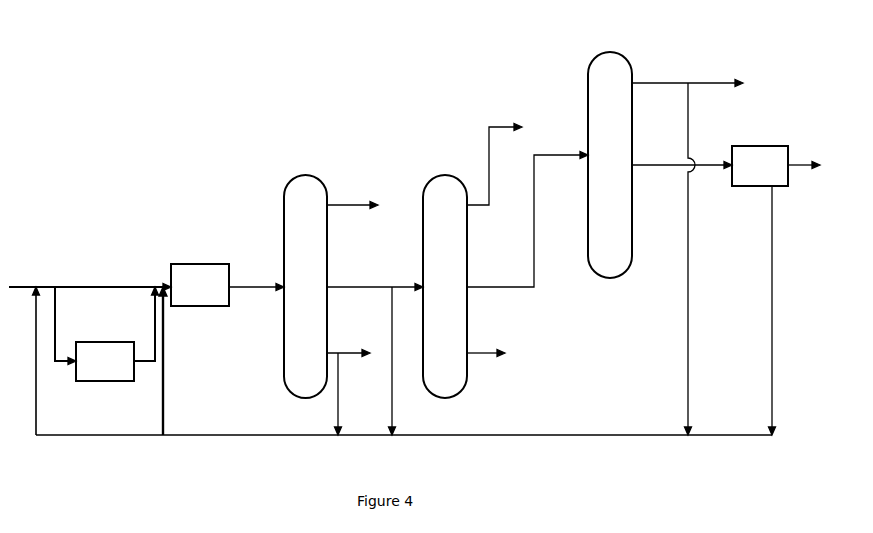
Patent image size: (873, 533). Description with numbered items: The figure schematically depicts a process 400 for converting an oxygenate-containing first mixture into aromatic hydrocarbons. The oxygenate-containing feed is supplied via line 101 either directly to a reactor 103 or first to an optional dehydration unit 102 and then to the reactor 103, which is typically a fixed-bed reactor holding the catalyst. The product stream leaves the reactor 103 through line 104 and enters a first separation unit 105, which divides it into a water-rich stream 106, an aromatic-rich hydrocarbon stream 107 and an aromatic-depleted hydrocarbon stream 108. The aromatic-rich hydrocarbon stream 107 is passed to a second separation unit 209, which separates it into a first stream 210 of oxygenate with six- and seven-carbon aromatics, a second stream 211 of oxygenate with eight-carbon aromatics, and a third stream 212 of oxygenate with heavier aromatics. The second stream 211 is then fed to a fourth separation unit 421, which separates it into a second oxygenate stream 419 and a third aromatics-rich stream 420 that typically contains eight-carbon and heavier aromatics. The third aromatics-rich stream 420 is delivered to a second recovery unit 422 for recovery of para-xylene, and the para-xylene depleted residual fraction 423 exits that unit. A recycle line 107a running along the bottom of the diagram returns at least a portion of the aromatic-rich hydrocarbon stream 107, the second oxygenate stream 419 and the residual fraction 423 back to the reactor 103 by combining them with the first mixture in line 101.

The process 400 is at (180, 97).
The line 101 is at (96, 287).
The dehydration unit 102 is at (107, 334).
The reactor 103 is at (200, 285).
The line 104 is at (262, 287).
The first separation unit 105 is at (305, 286).
The water-rich stream 106 is at (353, 205).
The aromatic-rich hydrocarbon stream 107 is at (350, 287).
The recycle line 107a is at (562, 434).
The aromatic-depleted hydrocarbon stream 108 is at (355, 353).
The second separation unit 209 is at (445, 286).
The first stream 210 is at (500, 127).
The second stream 211 is at (482, 287).
The third stream 212 is at (493, 353).
The second oxygenate stream 419 is at (678, 83).
The third aromatics-rich stream 420 is at (670, 168).
The fourth separation unit 421 is at (610, 165).
The second recovery unit 422 is at (776, 166).
The residual fraction 423 is at (772, 219).